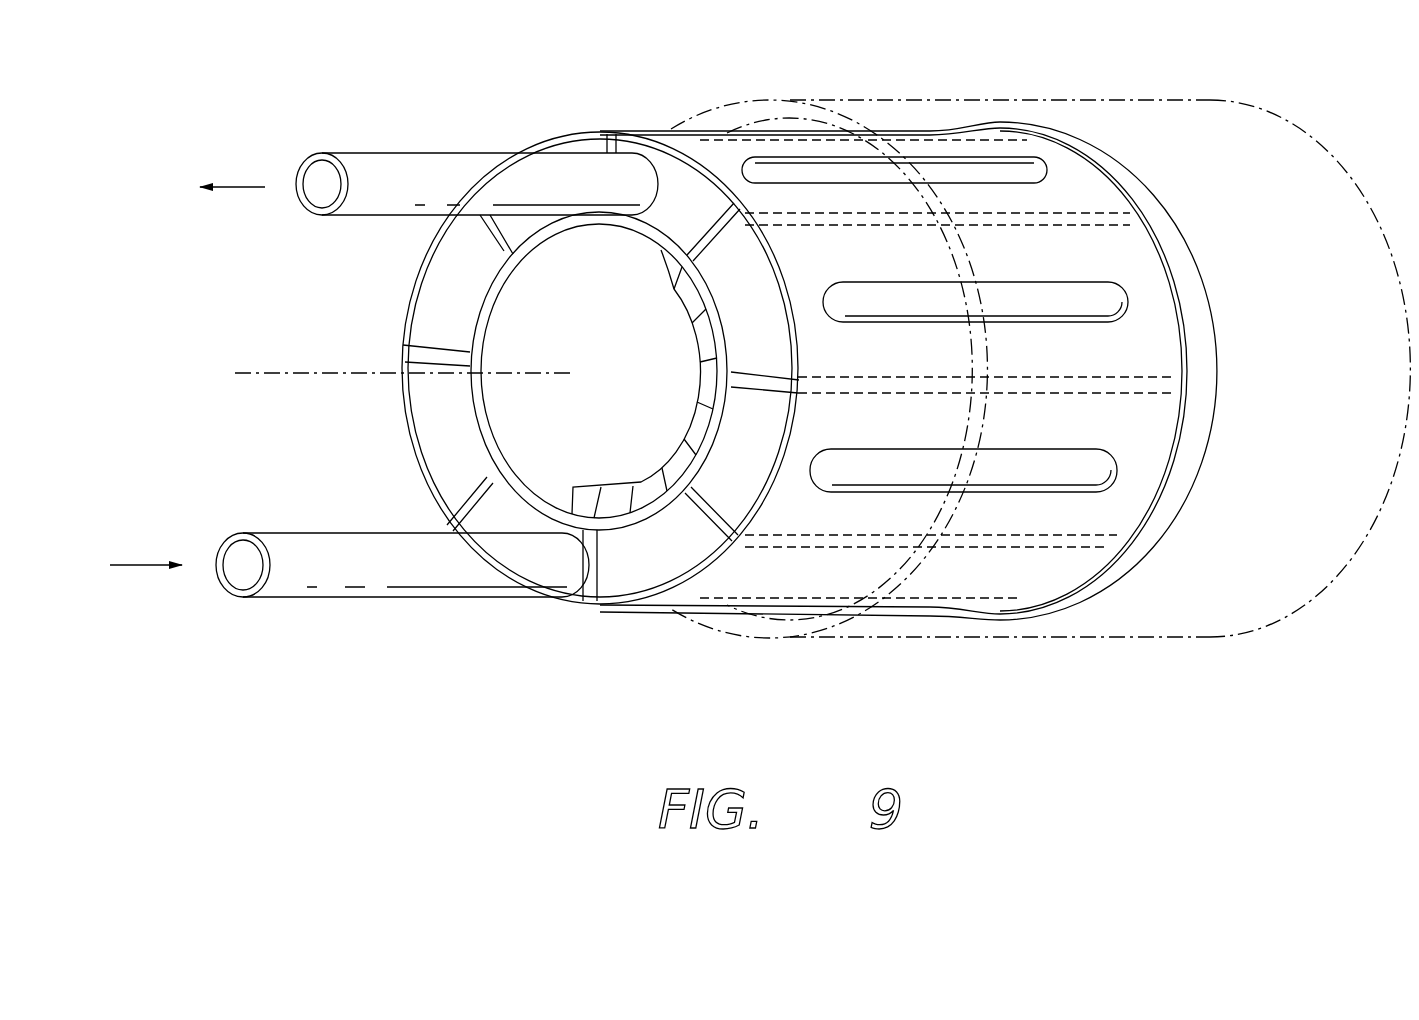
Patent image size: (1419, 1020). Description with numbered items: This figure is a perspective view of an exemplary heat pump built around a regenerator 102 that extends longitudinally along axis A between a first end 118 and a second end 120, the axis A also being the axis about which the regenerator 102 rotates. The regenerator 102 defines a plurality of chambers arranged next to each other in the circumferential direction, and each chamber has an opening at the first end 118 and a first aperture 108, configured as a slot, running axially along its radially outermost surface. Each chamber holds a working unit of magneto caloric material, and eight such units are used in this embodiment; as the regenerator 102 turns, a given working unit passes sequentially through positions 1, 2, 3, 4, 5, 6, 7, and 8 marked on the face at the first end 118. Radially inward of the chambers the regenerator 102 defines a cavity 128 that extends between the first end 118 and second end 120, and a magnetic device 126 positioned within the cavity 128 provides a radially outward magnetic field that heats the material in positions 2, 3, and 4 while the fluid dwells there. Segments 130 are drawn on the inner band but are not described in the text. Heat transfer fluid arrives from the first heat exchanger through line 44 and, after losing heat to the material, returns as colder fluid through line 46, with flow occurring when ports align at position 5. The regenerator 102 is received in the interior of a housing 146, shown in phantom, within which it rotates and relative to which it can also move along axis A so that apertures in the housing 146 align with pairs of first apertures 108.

The first end 118 is at (512, 120).
The cavity 128 is at (492, 386).
The magnetic device 126 is at (655, 262).
The band segments 130 is at (692, 302).
The position 1 is at (707, 225).
The position 2 is at (765, 342).
The position 3 is at (719, 490).
The position 4 is at (620, 565).
The position 5 is at (508, 516).
The position 6 is at (436, 397).
The position 7 is at (479, 257).
The position 8 is at (590, 146).
The line 46 is at (391, 172).
The line 44 is at (310, 566).
The axis A is at (385, 372).
The regenerator 102 is at (630, 576).
The second end 120 is at (987, 98).
The first aperture 108 is at (772, 160).
The housing 146 is at (1170, 637).